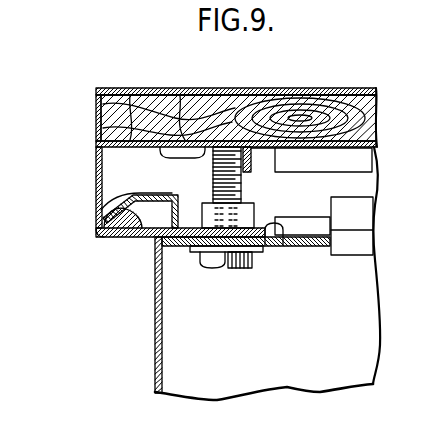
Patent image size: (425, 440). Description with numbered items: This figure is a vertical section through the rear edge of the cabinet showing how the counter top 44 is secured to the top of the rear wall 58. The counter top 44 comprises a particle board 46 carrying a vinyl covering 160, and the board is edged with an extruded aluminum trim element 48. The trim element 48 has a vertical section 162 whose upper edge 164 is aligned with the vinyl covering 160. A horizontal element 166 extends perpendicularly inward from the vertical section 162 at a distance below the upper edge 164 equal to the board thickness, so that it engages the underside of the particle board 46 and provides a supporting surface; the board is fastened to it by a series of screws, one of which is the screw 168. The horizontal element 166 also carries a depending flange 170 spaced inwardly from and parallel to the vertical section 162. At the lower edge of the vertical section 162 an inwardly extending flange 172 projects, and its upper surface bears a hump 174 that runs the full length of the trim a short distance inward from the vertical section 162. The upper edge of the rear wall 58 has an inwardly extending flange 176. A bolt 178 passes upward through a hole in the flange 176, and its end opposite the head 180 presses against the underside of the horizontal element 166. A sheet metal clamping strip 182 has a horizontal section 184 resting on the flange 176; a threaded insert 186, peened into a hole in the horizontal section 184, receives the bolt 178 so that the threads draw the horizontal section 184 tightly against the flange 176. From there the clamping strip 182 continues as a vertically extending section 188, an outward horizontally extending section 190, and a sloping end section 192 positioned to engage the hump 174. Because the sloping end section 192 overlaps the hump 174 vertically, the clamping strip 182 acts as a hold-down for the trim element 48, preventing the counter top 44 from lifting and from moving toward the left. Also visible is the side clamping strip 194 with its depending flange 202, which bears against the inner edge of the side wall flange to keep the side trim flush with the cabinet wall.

The counter top 44 is at (386, 64).
The particle board 46 is at (210, 88).
The trim element 48 is at (97, 168).
The rear wall 58 is at (155, 317).
The vinyl covering 160 is at (290, 88).
The vertical section 162 is at (97, 108).
The upper edge 164 is at (98, 89).
The horizontal element 166 is at (97, 152).
The screw 168 is at (180, 157).
The depending flange 170 is at (254, 160).
The inwardly extending flange 172 is at (147, 240).
The hump 174 is at (140, 237).
The flange 176 is at (305, 247).
The bolt 178 is at (241, 186).
The head 180 is at (235, 268).
The sheet metal clamping strip 182 is at (203, 191).
The horizontal section 184 is at (280, 246).
The threaded insert 186 is at (255, 209).
The vertically extending section 188 is at (168, 247).
The outward horizontally extending section 190 is at (100, 194).
The sloping end section 192 is at (96, 218).
The clamping strip 194 is at (345, 228).
The depending flange 202 is at (355, 255).